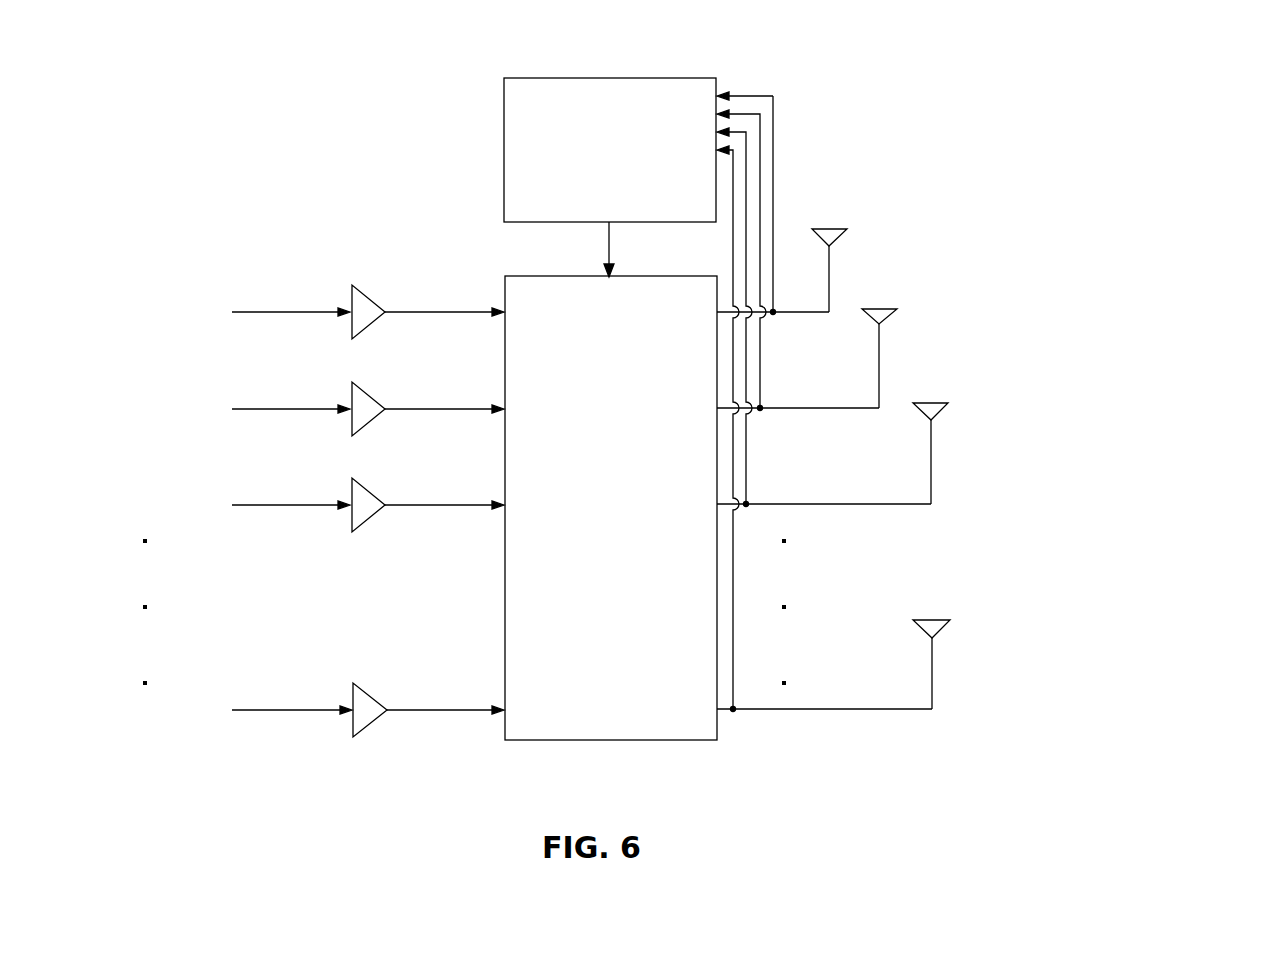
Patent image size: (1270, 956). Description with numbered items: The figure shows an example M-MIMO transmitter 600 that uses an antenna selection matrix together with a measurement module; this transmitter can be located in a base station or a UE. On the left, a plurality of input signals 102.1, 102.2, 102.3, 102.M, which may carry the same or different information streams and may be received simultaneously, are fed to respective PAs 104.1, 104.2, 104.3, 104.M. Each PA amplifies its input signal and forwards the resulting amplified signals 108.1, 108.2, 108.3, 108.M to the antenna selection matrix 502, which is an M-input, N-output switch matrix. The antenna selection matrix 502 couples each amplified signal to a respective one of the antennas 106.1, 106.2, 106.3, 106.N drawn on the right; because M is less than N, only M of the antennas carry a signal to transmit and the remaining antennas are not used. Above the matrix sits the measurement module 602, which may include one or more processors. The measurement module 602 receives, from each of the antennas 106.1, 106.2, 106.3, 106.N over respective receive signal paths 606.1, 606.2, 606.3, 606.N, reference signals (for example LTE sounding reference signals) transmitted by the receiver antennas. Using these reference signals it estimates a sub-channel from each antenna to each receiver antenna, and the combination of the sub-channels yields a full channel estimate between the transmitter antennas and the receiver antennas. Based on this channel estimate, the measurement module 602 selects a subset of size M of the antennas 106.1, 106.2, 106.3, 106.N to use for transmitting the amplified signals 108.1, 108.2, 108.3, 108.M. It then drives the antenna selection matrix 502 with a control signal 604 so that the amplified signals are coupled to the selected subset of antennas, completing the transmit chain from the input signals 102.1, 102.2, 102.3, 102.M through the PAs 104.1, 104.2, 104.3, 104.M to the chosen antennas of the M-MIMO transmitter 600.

The M-MIMO transmitter 600 is at (1242, 61).
The measurement module 602 is at (610, 150).
The control signal 604 is at (609, 240).
The antenna selection matrix 502 is at (611, 508).
The input signal 102.1 is at (259, 305).
The input signal 102.2 is at (259, 402).
The input signal 102.3 is at (259, 498).
The input signal 102.M is at (266, 706).
The PA 104.1 is at (366, 286).
The PA 104.2 is at (371, 399).
The PA 104.3 is at (371, 492).
The PA 104.M is at (378, 700).
The amplified signal 108.1 is at (458, 305).
The amplified signal 108.2 is at (458, 402).
The amplified signal 108.3 is at (458, 498).
The amplified signal 108.M is at (460, 707).
The antenna 106.1 is at (828, 227).
The antenna 106.2 is at (878, 307).
The antenna 106.3 is at (930, 401).
The antenna 106.N is at (930, 618).
The receive signal path 606.1 is at (773, 112).
The receive signal path 606.2 is at (760, 144).
The receive signal path 606.3 is at (746, 181).
The receive signal path 606.N is at (733, 637).